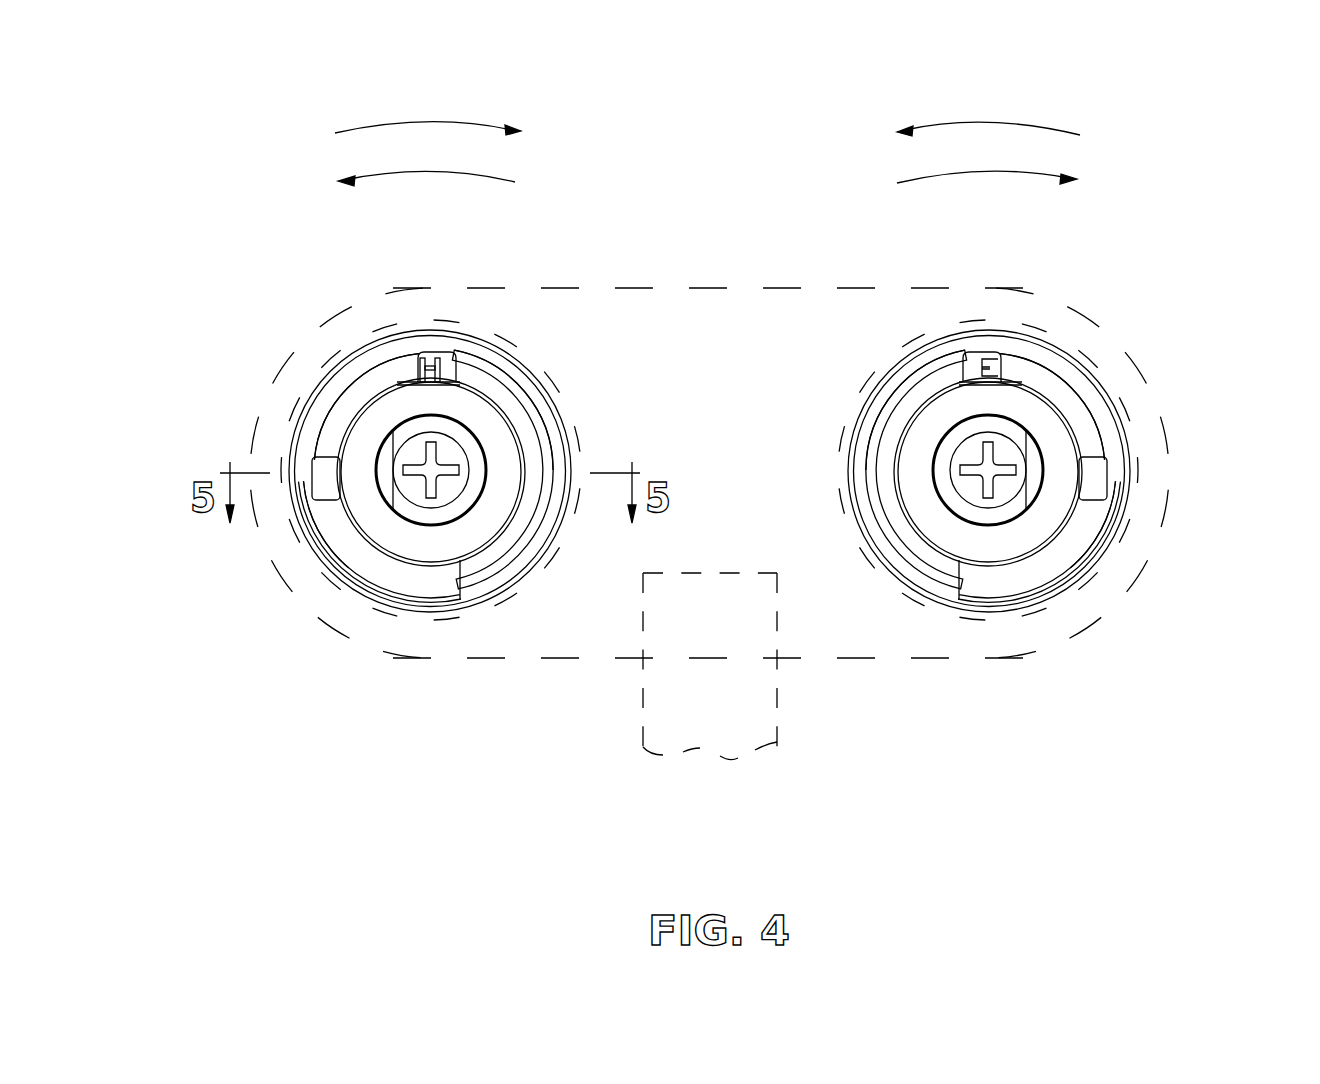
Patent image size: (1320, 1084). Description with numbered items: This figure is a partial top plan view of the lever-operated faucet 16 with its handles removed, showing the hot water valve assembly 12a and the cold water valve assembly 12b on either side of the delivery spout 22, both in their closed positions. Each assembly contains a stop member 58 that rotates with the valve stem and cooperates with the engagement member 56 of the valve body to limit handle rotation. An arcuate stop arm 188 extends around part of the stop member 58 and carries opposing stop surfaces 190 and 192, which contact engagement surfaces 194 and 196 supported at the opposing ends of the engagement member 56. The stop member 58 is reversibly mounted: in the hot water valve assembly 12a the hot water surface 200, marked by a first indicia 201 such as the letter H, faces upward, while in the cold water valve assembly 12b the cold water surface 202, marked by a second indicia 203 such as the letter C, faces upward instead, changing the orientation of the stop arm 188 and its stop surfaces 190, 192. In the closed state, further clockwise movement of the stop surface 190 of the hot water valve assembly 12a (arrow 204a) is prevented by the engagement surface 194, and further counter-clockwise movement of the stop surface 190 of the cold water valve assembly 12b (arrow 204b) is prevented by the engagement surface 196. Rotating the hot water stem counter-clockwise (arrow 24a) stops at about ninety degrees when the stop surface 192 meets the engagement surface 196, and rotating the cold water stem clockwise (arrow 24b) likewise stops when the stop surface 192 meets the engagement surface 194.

The hot water valve assembly 12a is at (491, 296).
The cold water valve assembly 12b is at (927, 303).
The lever-operated faucet 16 is at (701, 278).
The delivery spout 22 is at (790, 745).
The arrow 24a is at (482, 170).
The arrow 24b is at (955, 168).
The engagement member 56 is at (528, 490).
The stop member 58 is at (371, 355).
The arcuate stop arm 188 is at (347, 400).
The stop surface 190 is at (523, 393).
The stop surface 192 is at (330, 507).
The engagement surface 194 is at (456, 345).
The engagement surface 196 is at (448, 579).
The hot water surface 200 is at (326, 466).
The first indicia 201 is at (432, 352).
The cold water surface 202 is at (1093, 466).
The second indicia 203 is at (985, 352).
The arrow 204a is at (428, 122).
The arrow 204b is at (993, 122).